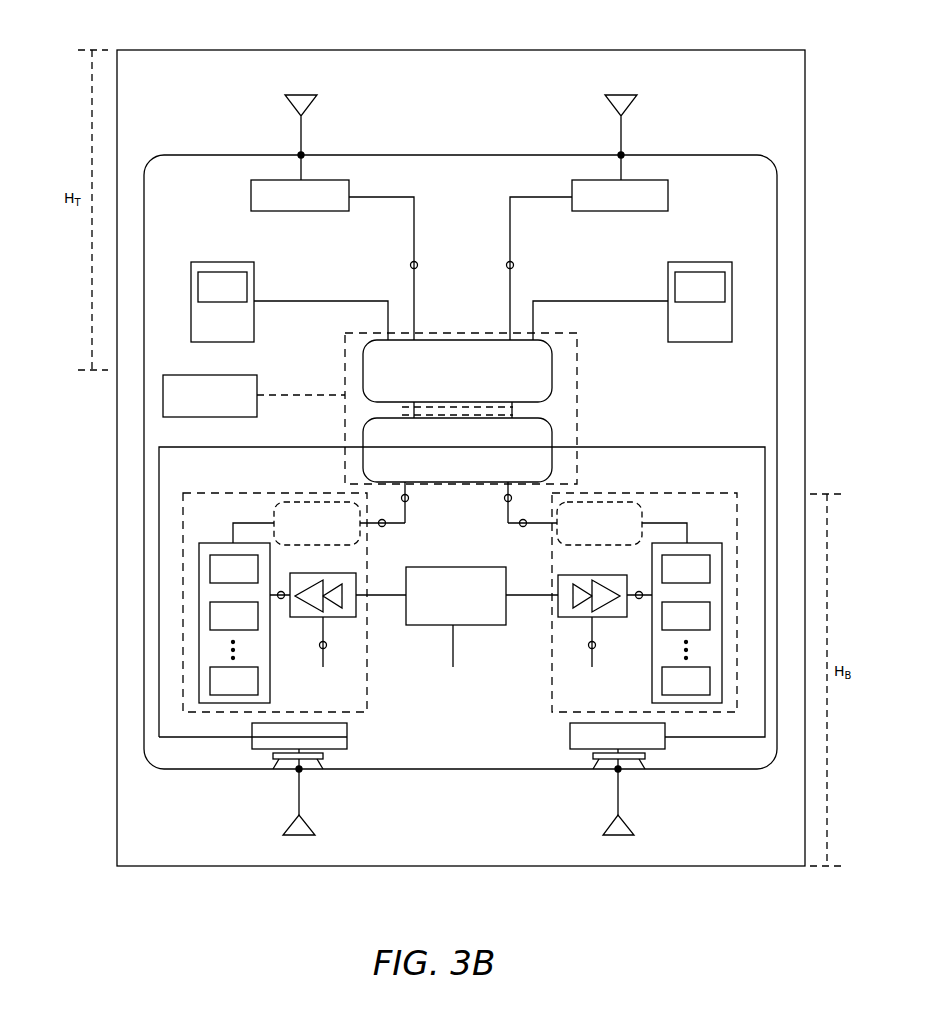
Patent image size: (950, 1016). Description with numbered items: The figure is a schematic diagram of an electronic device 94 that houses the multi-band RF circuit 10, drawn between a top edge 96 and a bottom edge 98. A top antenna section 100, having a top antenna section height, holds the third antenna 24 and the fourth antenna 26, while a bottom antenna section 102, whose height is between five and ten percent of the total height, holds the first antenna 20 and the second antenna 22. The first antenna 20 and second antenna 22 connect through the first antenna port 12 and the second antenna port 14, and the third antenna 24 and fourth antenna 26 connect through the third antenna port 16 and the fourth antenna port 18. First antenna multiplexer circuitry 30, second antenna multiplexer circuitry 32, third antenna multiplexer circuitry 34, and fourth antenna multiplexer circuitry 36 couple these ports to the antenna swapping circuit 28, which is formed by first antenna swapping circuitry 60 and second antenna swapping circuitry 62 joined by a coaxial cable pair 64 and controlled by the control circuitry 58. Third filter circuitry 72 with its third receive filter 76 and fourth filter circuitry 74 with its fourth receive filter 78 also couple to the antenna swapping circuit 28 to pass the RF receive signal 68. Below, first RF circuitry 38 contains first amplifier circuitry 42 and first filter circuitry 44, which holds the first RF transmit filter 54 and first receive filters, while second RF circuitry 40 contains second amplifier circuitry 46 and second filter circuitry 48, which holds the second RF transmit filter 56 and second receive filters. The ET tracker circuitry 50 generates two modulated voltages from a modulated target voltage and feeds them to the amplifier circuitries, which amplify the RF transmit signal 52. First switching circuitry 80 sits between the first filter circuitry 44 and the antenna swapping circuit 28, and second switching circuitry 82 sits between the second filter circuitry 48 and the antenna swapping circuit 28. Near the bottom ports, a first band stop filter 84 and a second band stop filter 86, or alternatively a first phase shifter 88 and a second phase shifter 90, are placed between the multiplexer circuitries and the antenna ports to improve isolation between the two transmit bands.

The multi-band RF circuit 10 is at (435, 751).
The first antenna port 12 is at (302, 772).
The second antenna port 14 is at (621, 772).
The third antenna port 16 is at (623, 153).
The fourth antenna port 18 is at (303, 153).
The first antenna 20 is at (303, 835).
The second antenna 22 is at (623, 835).
The third antenna 24 is at (619, 95).
The fourth antenna 26 is at (299, 95).
The antenna swapping circuit 28 is at (578, 358).
The first antenna multiplexer circuitry 30 is at (291, 744).
The second antenna multiplexer circuitry 32 is at (610, 744).
The third antenna multiplexer circuitry 34 is at (612, 204).
The fourth antenna multiplexer circuitry 36 is at (292, 204).
The first RF circuitry 38 is at (330, 702).
The second RF circuitry 40 is at (559, 702).
The first amplifier circuitry 42 is at (315, 573).
The first filter circuitry 44 is at (209, 542).
The second amplifier circuitry 46 is at (568, 575).
The second filter circuitry 48 is at (704, 542).
The ET tracker circuitry 50 is at (437, 567).
The RF transmit signal 52 is at (418, 266).
The first RF transmit filter 54 is at (226, 577).
The second RF transmit filter 56 is at (678, 577).
The control circuitry 58 is at (202, 403).
The first antenna swapping circuitry 60 is at (449, 477).
The second antenna swapping circuitry 62 is at (449, 398).
The coaxial cable pair 64 is at (518, 412).
The RF receive signal 68 is at (410, 266).
The third filter circuitry 72 is at (700, 262).
The fourth filter circuitry 74 is at (221, 262).
The third receive filter 76 is at (692, 295).
The fourth receive filter 78 is at (214, 295).
The first switching circuitry 80 is at (300, 500).
The second switching circuitry 82 is at (606, 500).
The first band stop filter 84 is at (322, 770).
The second band stop filter 86 is at (596, 770).
The first phase shifter 88 is at (276, 770).
The second phase shifter 90 is at (644, 770).
The electronic device 94 is at (765, 81).
The top edge 96 is at (716, 48).
The bottom edge 98 is at (712, 868).
The top antenna section 100 is at (76, 144).
The bottom antenna section 102 is at (834, 620).